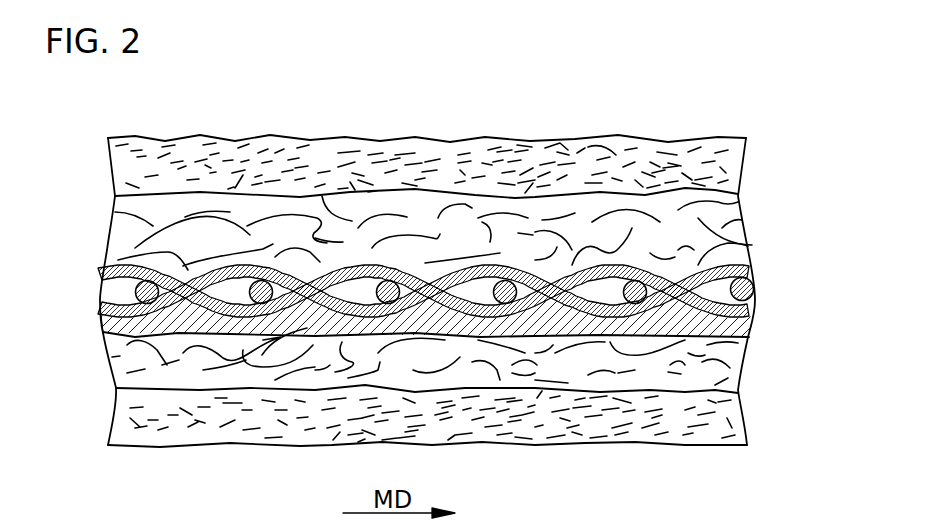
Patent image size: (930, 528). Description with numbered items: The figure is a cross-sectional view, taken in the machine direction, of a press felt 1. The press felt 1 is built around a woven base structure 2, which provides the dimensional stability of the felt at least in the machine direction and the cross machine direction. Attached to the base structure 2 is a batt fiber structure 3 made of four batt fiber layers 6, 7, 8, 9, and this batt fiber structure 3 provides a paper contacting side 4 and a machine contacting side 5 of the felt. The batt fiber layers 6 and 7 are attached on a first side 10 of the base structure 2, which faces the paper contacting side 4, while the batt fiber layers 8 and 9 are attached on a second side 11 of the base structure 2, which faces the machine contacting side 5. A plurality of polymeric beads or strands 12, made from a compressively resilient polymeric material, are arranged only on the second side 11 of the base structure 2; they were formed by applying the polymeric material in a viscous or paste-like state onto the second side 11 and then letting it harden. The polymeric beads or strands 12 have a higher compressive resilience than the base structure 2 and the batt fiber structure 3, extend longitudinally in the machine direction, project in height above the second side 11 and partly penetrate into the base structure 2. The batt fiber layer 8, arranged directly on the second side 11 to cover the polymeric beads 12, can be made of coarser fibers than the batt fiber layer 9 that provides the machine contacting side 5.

The press felt 1 is at (698, 84).
The woven base structure 2 is at (757, 302).
The batt fiber structure 3 is at (56, 273).
The paper contacting side 4 is at (272, 138).
The machine contacting side 5 is at (267, 445).
The batt fiber layer 6 is at (136, 162).
The batt fiber layer 7 is at (145, 239).
The batt fiber layer 8 is at (123, 355).
The batt fiber layer 9 is at (127, 417).
The first side 10 is at (752, 245).
The second side 11 is at (108, 326).
The polymeric beads or strands 12 is at (175, 318).